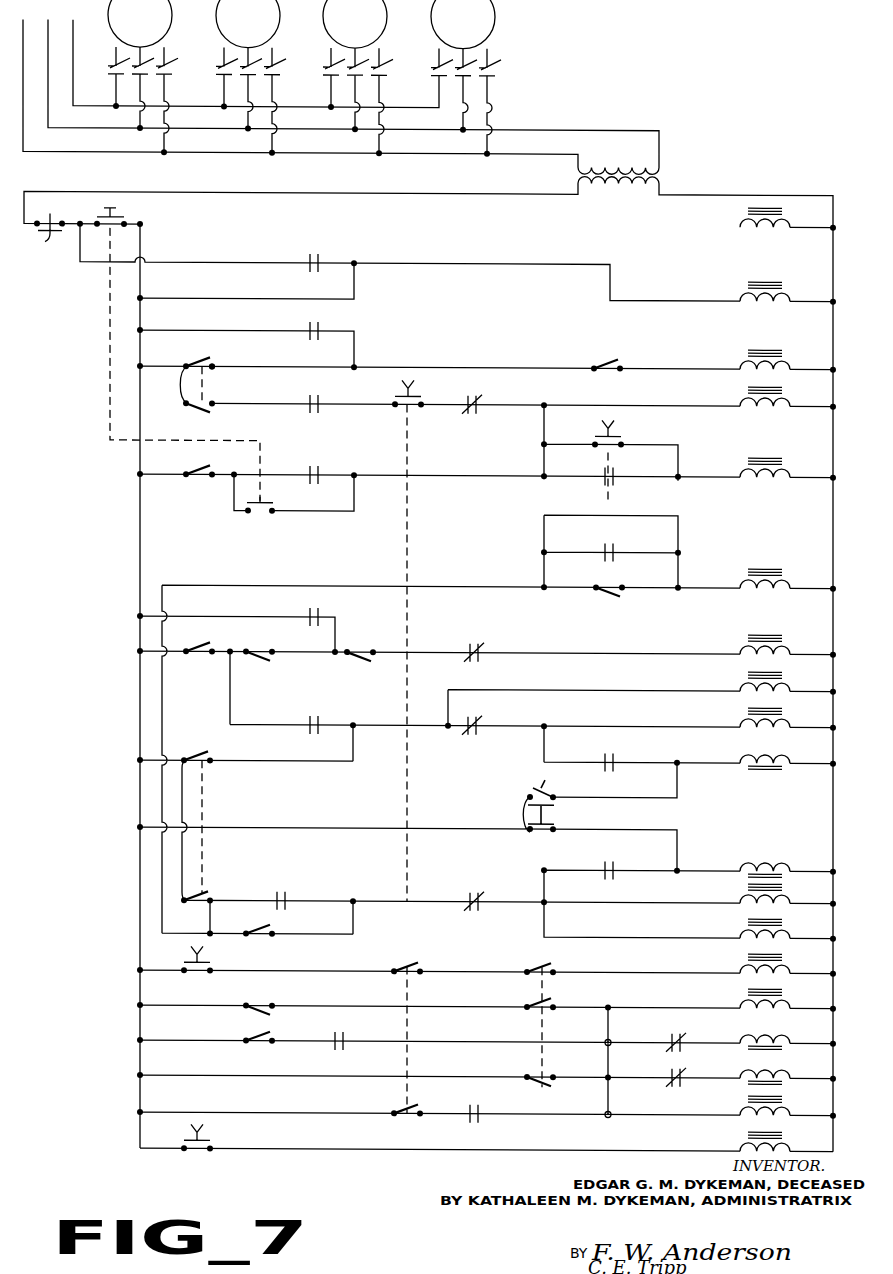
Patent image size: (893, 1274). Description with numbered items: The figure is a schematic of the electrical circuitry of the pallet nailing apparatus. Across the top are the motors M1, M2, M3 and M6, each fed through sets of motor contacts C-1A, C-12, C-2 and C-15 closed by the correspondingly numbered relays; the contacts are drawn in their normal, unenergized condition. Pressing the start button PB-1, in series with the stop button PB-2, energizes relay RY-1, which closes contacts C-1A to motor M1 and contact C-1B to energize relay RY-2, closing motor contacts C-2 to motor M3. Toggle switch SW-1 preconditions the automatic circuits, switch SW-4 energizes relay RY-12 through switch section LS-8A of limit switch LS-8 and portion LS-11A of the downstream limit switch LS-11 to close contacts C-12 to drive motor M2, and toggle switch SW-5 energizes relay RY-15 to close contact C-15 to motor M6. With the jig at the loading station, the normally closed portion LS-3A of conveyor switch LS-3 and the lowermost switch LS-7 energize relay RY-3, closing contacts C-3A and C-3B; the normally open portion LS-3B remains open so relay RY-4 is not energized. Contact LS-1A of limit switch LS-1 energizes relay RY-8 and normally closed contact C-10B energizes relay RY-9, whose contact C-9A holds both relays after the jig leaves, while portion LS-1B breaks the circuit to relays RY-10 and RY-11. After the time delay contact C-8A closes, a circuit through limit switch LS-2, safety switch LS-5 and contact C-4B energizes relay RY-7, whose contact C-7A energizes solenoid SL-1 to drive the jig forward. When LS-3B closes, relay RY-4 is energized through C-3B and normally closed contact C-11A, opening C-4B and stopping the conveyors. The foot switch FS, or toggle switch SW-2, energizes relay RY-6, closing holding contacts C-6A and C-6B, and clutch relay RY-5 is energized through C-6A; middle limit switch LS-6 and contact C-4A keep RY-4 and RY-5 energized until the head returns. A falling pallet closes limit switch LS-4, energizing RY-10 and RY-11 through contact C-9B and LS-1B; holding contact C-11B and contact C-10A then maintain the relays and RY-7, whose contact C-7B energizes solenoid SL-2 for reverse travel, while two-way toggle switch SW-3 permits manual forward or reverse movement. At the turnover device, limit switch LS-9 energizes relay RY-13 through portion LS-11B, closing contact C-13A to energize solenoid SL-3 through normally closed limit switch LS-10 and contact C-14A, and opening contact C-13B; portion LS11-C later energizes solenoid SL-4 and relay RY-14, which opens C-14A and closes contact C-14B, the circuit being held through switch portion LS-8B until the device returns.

The motor M1 is at (140, 77).
The drive motor M2 is at (248, 78).
The motor M3 is at (355, 78).
The motor M6 is at (463, 78).
The set of contacts C-1A is at (160, 58).
The contact C-12 is at (267, 58).
The set of motor contacts C-2 is at (372, 59).
The contact C-15 is at (489, 60).
The start button PB-1 is at (166, 212).
The stop button PB-2 is at (39, 228).
The contact C-1B is at (322, 256).
The contact C-3A is at (322, 325).
The contact C-3B is at (307, 400).
The conveyor switch LS-3 is at (184, 365).
The normally closed portion of switch LS-3 LS-3A is at (214, 363).
The normally open portion of switch LS-3 LS-3B is at (228, 408).
The toggle switch SW-1 is at (398, 391).
The normally closed contact C-11A is at (480, 397).
The lowermost switch LS-7 is at (602, 364).
The toggle switch SW-2 is at (614, 428).
The contact C-4A is at (322, 468).
The holding contact C-6A is at (626, 462).
The middle limit switch LS-6 is at (205, 480).
The holding contact C-6B is at (626, 538).
The foot switch FS is at (614, 596).
The contact C-10A is at (306, 613).
The normally closed limit switch LS-2 is at (206, 644).
The time delay contact C-8A is at (262, 660).
The safety switch LS-5 is at (372, 632).
The normally closed contact C-4B is at (482, 645).
The contact C-9A is at (334, 711).
The normally closed contact C-10B is at (480, 718).
The normally open contact C-7A is at (616, 754).
The normally open contact of limit switch LS-1 LS-1A is at (204, 752).
The limit switch LS-1 is at (210, 795).
The two-way toggle switch SW-3 is at (529, 791).
The contact C-7B is at (622, 865).
The normally closed portion of limit switch LS-1 LS-1B is at (204, 892).
The holding contact C-11B is at (288, 895).
The normally closed contact C-9B is at (498, 888).
The normally open limit switch LS-4 is at (266, 925).
The switch SW-4 is at (206, 956).
The switch section LS-8A is at (412, 962).
The switch portion LS-11A is at (542, 962).
The limit switch LS-9 is at (248, 1004).
The limit switch LS-8 is at (386, 1005).
The switch portion LS-11B is at (546, 998).
The normally closed limit switch LS-10 is at (250, 1040).
The contact C-13A is at (331, 1036).
The downstream limit switch LS-11 is at (526, 1033).
The normally closed contact C-14A is at (666, 1048).
The switch portion LS11-C is at (532, 1075).
The contact C-13B is at (668, 1085).
The switch portion LS-8B is at (396, 1110).
The contact C-14B is at (480, 1118).
The toggle switch SW-5 is at (206, 1134).
The relay RY-1 is at (765, 231).
The relay RY-2 is at (765, 303).
The relay RY-3 is at (788, 362).
The relay RY-4 is at (784, 405).
The clutch relay RY-5 is at (788, 468).
The relay RY-6 is at (788, 576).
The relay RY-7 is at (786, 646).
The relay RY-8 is at (736, 683).
The relay RY-9 is at (736, 720).
The solenoid SL-1 is at (742, 763).
The solenoid SL-2 is at (742, 864).
The relay RY-10 is at (738, 896).
The relay RY-11 is at (738, 931).
The relay RY-12 is at (738, 966).
The relay RY-13 is at (740, 1001).
The solenoid SL-3 is at (748, 1036).
The solenoid SL-4 is at (750, 1071).
The relay RY-14 is at (742, 1108).
The relay RY-15 is at (740, 1145).